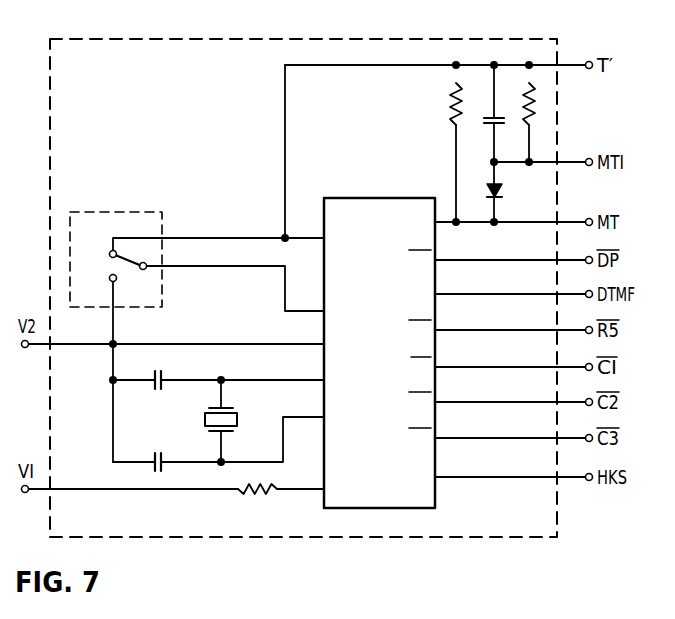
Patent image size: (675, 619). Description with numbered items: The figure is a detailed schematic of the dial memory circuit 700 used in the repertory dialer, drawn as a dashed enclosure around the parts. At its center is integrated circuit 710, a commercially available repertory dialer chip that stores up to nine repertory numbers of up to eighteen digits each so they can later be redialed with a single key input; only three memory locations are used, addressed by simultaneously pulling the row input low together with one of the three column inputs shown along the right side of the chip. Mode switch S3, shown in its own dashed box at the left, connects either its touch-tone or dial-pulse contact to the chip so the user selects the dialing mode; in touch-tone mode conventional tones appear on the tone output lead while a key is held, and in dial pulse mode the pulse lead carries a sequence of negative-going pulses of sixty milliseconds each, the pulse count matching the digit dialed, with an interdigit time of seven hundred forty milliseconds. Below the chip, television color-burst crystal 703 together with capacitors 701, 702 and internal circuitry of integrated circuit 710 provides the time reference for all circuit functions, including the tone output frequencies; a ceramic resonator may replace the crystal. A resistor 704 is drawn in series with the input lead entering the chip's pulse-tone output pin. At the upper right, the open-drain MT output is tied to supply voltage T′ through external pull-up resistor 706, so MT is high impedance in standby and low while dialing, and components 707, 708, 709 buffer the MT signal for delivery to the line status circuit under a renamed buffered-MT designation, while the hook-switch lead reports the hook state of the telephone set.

The dialer circuit 700 is at (418, 39).
The capacitor 701 is at (165, 374).
The capacitor 702 is at (157, 450).
The television color-burst crystal 703 is at (234, 414).
The resistor 704 is at (263, 494).
The external pull-up resistor 706 is at (451, 106).
The MT signal buffer component 707 is at (487, 123).
The MT signal buffer component 708 is at (503, 190).
The MT signal buffer component 709 is at (535, 110).
The integrated circuit 710 is at (367, 198).
The mode switch S3 is at (100, 212).